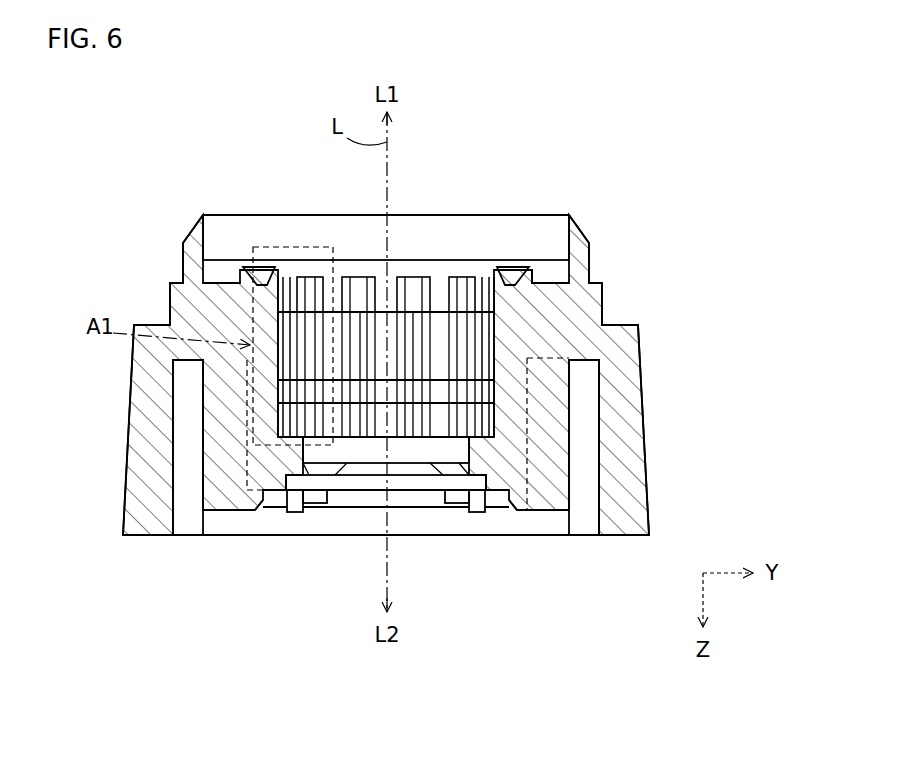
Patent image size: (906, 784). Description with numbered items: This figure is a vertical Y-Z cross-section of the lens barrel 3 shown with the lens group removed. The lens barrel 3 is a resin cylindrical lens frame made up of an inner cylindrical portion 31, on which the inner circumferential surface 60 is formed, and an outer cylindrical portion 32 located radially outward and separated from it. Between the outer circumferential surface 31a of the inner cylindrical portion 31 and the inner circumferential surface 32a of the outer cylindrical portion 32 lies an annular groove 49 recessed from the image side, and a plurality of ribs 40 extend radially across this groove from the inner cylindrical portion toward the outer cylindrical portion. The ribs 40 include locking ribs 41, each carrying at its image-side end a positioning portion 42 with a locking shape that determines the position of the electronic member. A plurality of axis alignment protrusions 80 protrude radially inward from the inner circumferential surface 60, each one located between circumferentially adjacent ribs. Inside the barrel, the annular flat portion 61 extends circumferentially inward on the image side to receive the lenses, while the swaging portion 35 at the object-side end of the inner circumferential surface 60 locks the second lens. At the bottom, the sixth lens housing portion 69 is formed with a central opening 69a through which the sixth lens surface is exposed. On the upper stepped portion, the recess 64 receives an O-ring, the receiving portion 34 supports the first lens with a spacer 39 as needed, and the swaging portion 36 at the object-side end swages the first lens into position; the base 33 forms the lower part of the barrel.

The lens barrel 3 is at (76, 106).
The inner cylindrical portion 31 is at (603, 413).
The outer circumferential surface of the inner cylindrical portion 31a is at (237, 387).
The outer cylindrical portion 32 is at (645, 465).
The inner circumferential surface of the outer cylindrical portion 32a is at (183, 380).
The base plate 33 is at (648, 518).
The receiving portion 34 is at (183, 290).
The swaging portion 35 is at (268, 217).
The swaging portion 36 is at (203, 215).
The spacer 39 is at (237, 268).
The ribs 40 is at (390, 590).
The locking rib 41 is at (220, 512).
The positioning portion 42 is at (260, 512).
The annular groove 49 is at (180, 537).
The inner circumferential surface 60 is at (370, 268).
The annular flat portion 61 is at (280, 428).
The recess 64 is at (570, 280).
The sixth lens housing portion 69 is at (287, 478).
The opening 69a is at (318, 505).
The axis alignment protrusions 80 is at (357, 272).